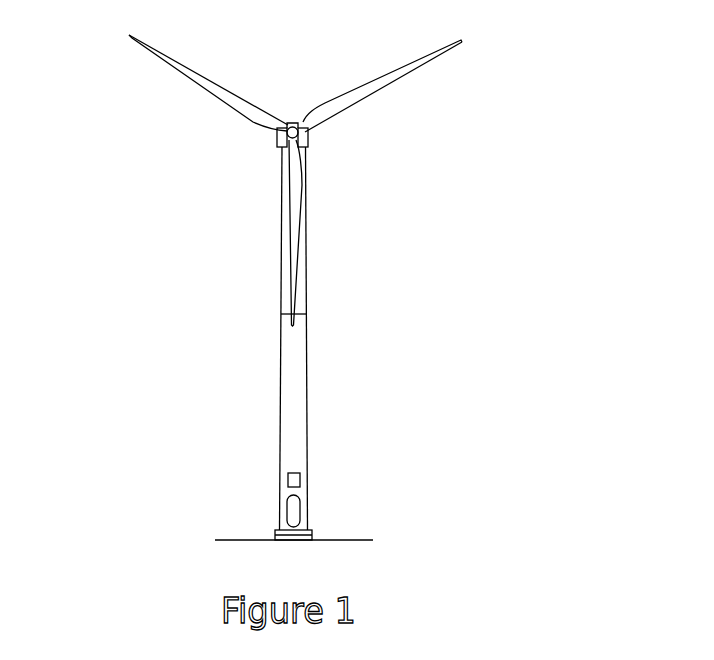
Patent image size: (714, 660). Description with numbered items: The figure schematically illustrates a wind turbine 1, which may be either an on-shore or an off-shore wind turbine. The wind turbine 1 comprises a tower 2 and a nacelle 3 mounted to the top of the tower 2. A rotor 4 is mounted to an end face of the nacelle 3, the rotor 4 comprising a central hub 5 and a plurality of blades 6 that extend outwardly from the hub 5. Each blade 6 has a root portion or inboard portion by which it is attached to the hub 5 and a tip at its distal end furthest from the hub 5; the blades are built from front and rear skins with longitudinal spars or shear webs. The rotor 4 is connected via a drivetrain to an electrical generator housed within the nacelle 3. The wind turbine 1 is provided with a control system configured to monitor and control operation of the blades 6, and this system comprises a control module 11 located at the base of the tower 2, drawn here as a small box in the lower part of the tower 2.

The wind turbine 1 is at (168, 222).
The tower 2 is at (307, 405).
The nacelle 3 is at (310, 142).
The rotor 4 is at (264, 84).
The central hub 5 is at (297, 124).
The blade 6 is at (152, 53).
The control module 11 is at (300, 480).